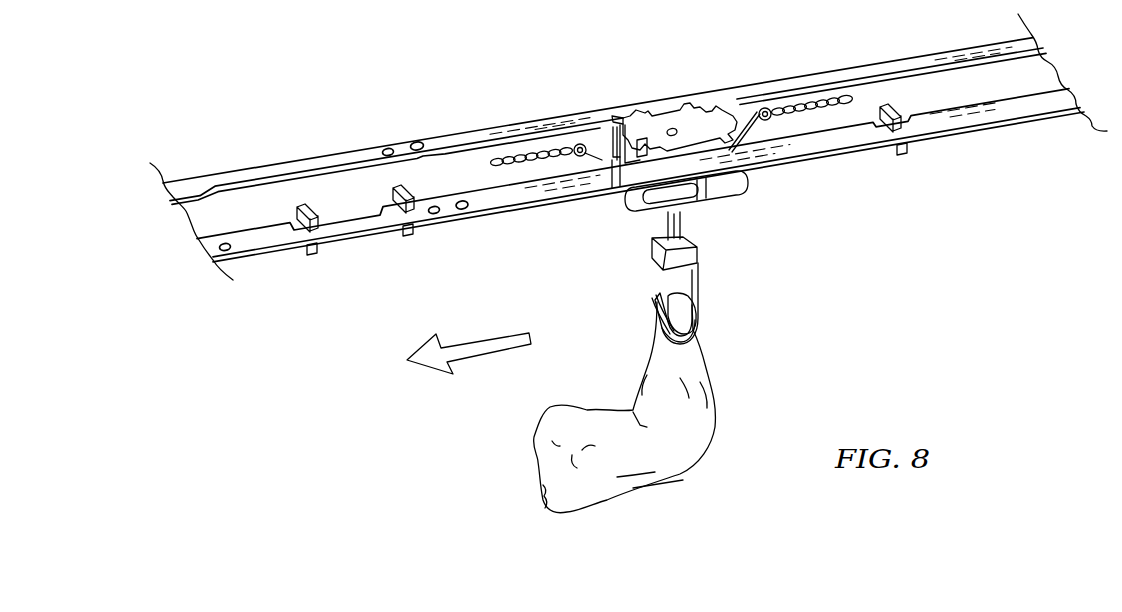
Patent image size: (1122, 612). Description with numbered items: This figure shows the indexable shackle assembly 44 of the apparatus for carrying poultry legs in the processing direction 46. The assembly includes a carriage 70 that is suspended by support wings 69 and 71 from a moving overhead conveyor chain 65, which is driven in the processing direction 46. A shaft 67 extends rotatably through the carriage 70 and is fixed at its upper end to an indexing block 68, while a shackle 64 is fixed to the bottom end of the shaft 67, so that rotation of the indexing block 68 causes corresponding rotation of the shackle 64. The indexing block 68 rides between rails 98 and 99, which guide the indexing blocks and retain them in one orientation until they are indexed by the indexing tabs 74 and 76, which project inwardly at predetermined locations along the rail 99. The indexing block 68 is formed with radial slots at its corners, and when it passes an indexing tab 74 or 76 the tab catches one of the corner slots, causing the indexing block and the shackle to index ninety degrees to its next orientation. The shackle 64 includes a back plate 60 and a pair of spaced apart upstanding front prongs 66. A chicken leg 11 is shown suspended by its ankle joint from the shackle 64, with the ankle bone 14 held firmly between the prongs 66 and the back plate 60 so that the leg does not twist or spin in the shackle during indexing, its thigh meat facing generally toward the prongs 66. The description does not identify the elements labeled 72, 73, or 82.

The chicken leg 11 is at (740, 412).
The ankle bone 14 is at (687, 312).
The indexable shackle assembly 44 is at (666, 139).
The processing direction 46 is at (490, 354).
The back plate 60 is at (694, 327).
The shackle 64 is at (703, 291).
The conveyor chain 65 is at (540, 150).
The front prongs 66 is at (665, 318).
The shaft 67 is at (685, 224).
The indexing block 68 is at (660, 122).
The support wing 69 is at (747, 128).
The carriage 70 is at (623, 213).
The support wing 71 is at (603, 145).
The rail assembly 72 is at (628, 156).
The lower track 73 is at (640, 190).
The indexing tab 74 is at (890, 104).
The indexing tab 76 is at (295, 212).
The support member 82 is at (408, 4).
The rail 98 is at (273, 167).
The rail 99 is at (253, 240).